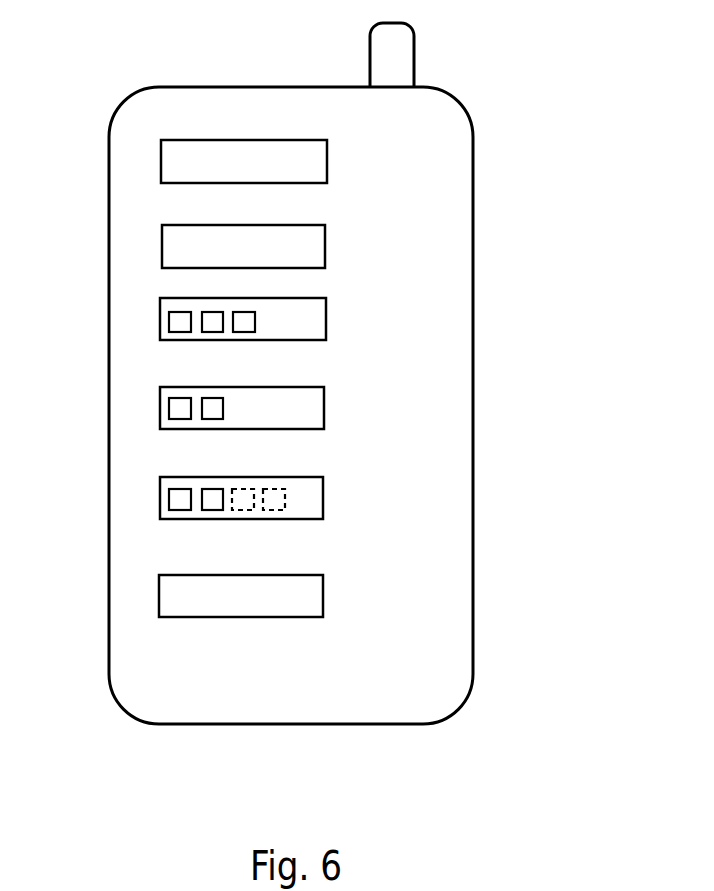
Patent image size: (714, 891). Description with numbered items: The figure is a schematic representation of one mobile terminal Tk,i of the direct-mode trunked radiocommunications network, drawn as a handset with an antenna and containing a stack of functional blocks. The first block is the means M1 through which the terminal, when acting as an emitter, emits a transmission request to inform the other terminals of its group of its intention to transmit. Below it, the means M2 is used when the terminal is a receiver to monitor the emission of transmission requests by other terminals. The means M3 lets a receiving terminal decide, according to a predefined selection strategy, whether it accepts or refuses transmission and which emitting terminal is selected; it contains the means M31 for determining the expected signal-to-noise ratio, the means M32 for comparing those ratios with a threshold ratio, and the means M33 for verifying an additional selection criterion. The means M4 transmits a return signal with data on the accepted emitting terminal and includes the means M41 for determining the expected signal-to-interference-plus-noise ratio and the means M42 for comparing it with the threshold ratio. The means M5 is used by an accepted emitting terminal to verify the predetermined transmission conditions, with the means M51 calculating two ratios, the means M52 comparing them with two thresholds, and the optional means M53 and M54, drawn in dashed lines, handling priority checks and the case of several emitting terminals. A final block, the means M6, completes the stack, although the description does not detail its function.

The mobile terminal Tk,i is at (474, 188).
The transmission request emitting means M1 is at (327, 160).
The transmission request monitoring means M2 is at (325, 243).
The transmission acceptance determining means M3 is at (326, 313).
The expected SNR determining means M31 is at (167, 317).
The SNR comparing means M32 is at (212, 333).
The additional selection criterion verifying means M33 is at (248, 333).
The return signal transmission means M4 is at (324, 404).
The expected SINR determining means M41 is at (167, 406).
The SINR comparing means M42 is at (213, 420).
The transmission condition verifying means M5 is at (323, 493).
The ratio calculating means M51 is at (167, 493).
The ratio comparing means M52 is at (207, 511).
The priority verifying means M53 is at (254, 512).
The multiple emitter SINR handling means M54 is at (280, 512).
The means M6 is at (323, 591).